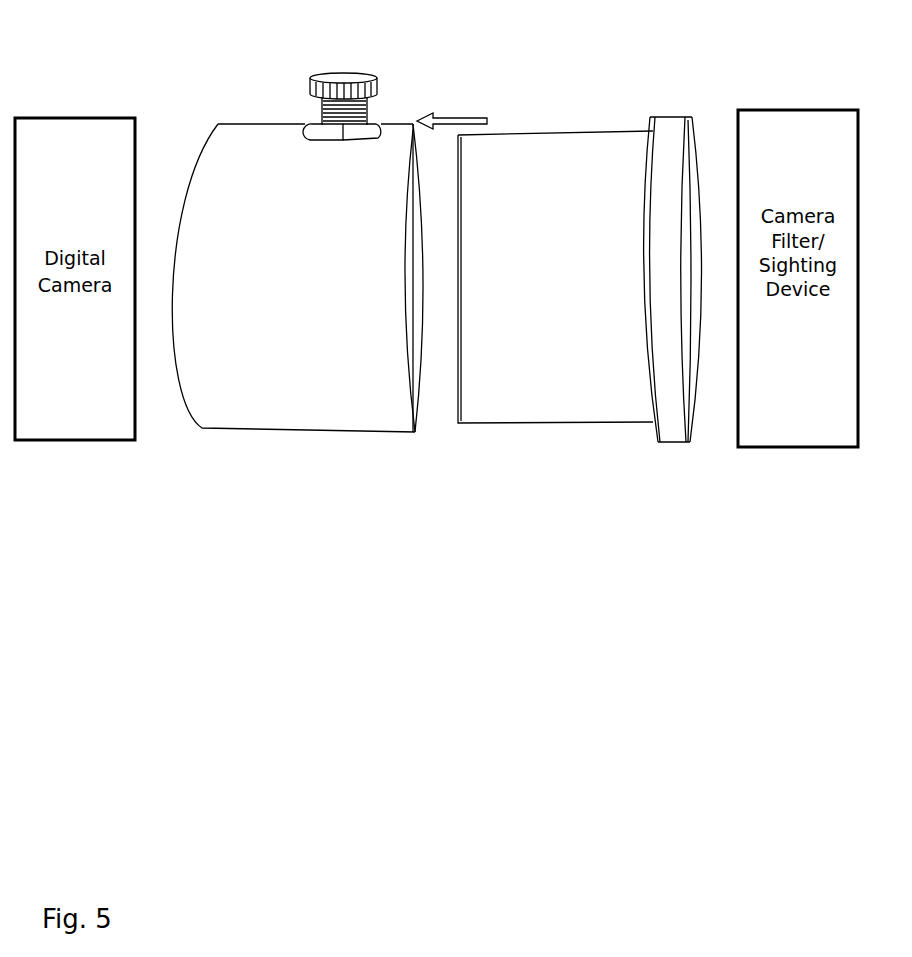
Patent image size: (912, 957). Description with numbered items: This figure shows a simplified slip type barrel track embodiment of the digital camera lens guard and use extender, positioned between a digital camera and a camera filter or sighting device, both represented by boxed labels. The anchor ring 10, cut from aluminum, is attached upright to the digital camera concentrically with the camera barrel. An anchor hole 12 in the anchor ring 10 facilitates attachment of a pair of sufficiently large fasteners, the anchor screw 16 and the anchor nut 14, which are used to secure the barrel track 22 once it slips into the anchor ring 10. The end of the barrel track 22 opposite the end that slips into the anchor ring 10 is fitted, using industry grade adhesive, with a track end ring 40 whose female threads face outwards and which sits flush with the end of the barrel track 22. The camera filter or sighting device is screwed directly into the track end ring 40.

The anchor ring 10 is at (273, 382).
The anchor hole 12 is at (306, 137).
The anchor nut 14 is at (378, 132).
The anchor screw 16 is at (347, 82).
The barrel track 22 is at (523, 362).
The track end ring 40 is at (667, 125).